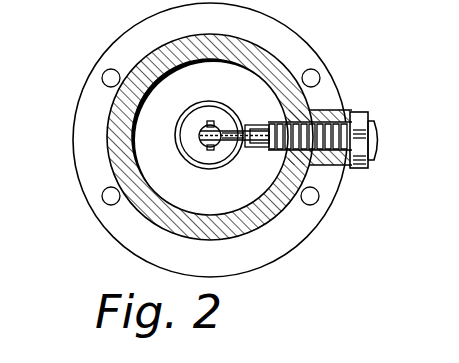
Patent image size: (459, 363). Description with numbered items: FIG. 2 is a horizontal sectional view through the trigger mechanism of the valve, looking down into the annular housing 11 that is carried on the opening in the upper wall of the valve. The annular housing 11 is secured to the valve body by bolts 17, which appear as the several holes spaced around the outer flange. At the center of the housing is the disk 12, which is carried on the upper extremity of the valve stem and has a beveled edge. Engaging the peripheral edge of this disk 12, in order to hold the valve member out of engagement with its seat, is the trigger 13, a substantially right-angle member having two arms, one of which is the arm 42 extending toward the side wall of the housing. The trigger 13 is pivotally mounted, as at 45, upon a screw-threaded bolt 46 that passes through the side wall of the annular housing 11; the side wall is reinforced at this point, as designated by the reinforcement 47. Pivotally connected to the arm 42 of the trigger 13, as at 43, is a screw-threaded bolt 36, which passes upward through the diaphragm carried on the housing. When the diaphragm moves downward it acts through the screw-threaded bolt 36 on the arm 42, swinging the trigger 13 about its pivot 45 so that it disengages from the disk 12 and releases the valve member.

The annular housing 11 is at (73, 117).
The disk 12 is at (194, 166).
The trigger 13 is at (228, 141).
The bolts 17 is at (110, 78).
The screw-threaded bolt 36 is at (203, 129).
The arm 42 is at (199, 135).
The pivotal connection 43 is at (211, 121).
The pivot 45 is at (258, 148).
The screw-threaded bolt 46 is at (353, 166).
The reinforcement 47 is at (347, 114).